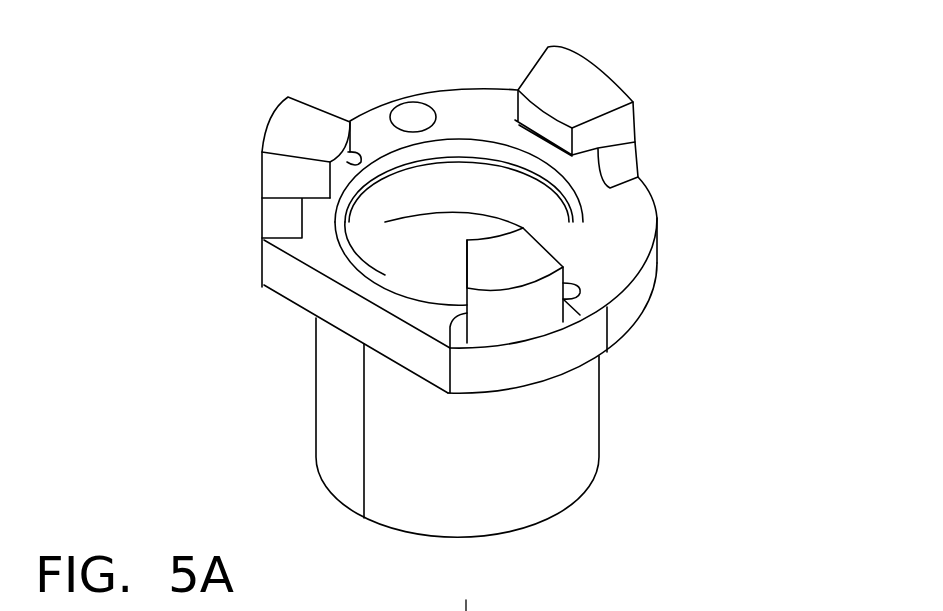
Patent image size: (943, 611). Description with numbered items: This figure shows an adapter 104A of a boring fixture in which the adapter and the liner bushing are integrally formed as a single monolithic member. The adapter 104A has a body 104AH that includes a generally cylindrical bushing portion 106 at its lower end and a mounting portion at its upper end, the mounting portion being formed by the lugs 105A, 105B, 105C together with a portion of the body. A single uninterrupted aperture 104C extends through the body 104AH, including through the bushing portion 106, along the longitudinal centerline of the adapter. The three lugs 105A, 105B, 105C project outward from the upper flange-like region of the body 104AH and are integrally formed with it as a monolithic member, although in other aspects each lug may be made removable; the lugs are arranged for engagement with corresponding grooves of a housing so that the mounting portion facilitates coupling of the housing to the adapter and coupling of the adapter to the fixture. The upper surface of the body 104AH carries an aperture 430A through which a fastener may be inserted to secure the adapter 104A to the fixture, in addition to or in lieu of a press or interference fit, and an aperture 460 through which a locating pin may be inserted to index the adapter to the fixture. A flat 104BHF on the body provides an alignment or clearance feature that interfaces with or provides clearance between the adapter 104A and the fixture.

The adapter 104A is at (702, 146).
The body 104AH is at (363, 287).
The flat 104BHF is at (412, 344).
The aperture 104C is at (463, 193).
The lug 105A is at (293, 135).
The lug 105B is at (580, 87).
The lug 105C is at (530, 260).
The bushing portion 106 is at (599, 428).
The aperture 430A is at (407, 102).
The aperture 460 is at (363, 148).